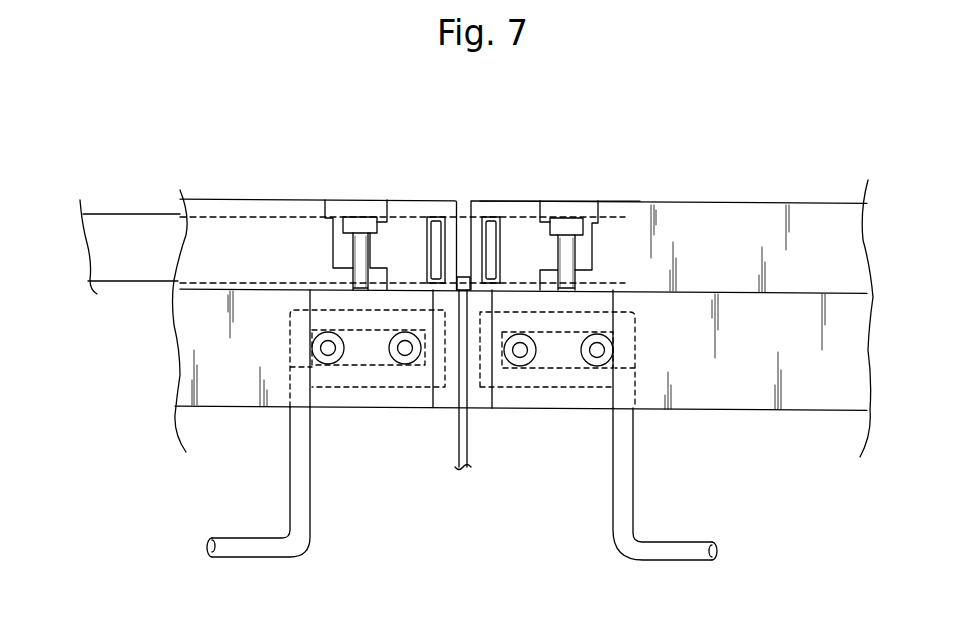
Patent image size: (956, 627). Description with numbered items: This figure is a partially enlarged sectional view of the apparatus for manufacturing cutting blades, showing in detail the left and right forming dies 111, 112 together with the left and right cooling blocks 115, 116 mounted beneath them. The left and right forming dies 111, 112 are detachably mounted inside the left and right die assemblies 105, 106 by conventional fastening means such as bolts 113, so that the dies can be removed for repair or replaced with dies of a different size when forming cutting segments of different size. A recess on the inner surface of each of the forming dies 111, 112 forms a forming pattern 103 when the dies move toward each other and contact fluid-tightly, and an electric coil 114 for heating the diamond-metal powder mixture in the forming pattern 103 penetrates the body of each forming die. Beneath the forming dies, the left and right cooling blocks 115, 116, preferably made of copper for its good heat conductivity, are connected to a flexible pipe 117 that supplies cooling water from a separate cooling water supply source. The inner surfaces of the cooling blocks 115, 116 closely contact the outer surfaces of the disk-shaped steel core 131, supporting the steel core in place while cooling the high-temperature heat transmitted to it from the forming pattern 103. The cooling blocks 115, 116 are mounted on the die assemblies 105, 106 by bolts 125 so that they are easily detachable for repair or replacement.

The forming pattern 103 is at (465, 203).
The left die assembly 105 is at (245, 202).
The right die assembly 106 is at (713, 215).
The left forming die 111 is at (408, 202).
The right forming die 112 is at (525, 202).
The bolts 113 is at (353, 200).
The electric coil 114 is at (132, 272).
The left cooling block 115 is at (413, 402).
The right cooling block 116 is at (572, 400).
The flexible pipe 117 is at (247, 548).
The bolts 125 is at (333, 362).
The disk-shaped steel core 131 is at (467, 450).